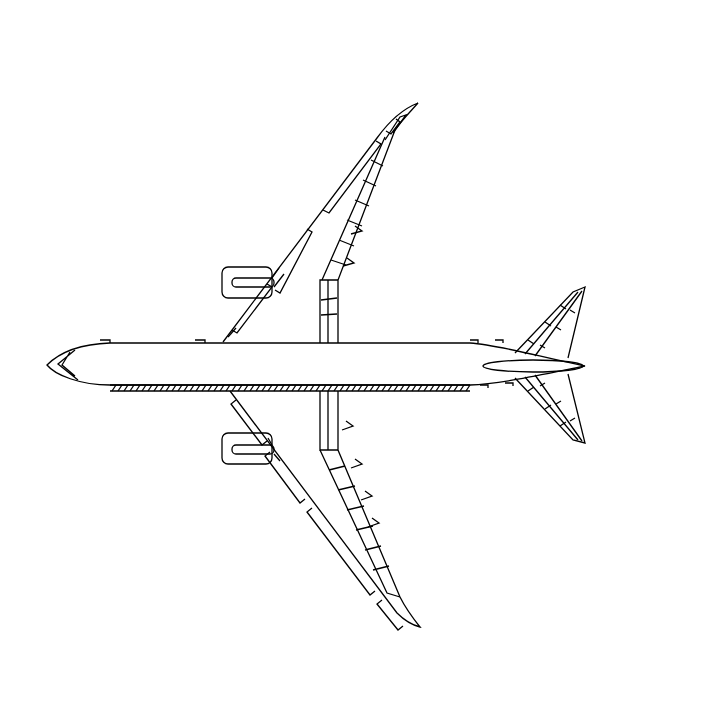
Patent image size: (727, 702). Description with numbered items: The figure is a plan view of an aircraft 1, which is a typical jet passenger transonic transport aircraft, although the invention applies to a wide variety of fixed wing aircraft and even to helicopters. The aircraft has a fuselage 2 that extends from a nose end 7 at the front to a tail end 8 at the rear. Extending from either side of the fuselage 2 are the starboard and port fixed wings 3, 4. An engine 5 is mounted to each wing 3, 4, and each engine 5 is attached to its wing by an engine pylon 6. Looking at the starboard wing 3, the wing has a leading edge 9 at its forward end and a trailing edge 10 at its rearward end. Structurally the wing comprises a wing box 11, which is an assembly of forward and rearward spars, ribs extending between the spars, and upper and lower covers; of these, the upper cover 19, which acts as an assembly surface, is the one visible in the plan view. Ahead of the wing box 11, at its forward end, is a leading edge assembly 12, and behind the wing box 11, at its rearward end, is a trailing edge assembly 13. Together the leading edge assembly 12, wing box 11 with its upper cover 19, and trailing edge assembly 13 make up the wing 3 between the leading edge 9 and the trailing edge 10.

The aircraft 1 is at (563, 88).
The fuselage 2 is at (136, 357).
The starboard fixed wing 3 is at (320, 237).
The port fixed wing 4 is at (320, 509).
The engine 5 is at (233, 270).
The engine pylon 6 is at (262, 283).
The nose end 7 is at (73, 376).
The tail end 8 is at (571, 352).
The leading edge 9 is at (355, 178).
The trailing edge 10 is at (363, 219).
The wing box 11 is at (303, 310).
The leading edge assembly 12 is at (250, 305).
The trailing edge assembly 13 is at (356, 244).
The upper cover 19 is at (375, 180).